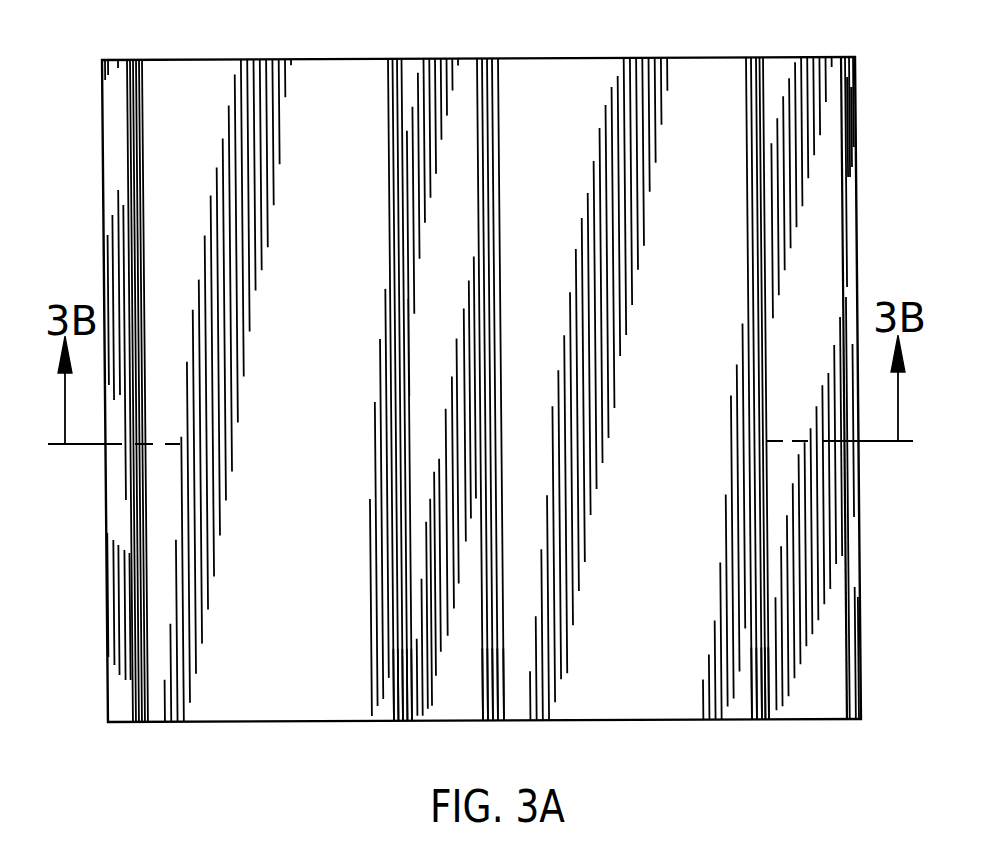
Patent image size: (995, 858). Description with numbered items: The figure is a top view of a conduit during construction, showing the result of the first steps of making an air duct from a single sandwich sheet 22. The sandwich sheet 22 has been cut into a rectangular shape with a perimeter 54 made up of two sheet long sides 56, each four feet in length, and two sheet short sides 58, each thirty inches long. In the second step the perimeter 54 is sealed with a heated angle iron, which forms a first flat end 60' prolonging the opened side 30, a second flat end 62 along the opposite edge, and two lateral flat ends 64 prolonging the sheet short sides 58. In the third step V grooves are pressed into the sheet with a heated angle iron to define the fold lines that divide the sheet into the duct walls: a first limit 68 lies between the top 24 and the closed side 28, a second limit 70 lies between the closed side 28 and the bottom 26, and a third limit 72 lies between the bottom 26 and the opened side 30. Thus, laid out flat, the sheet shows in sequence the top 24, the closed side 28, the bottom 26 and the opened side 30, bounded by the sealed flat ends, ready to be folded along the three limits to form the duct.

The sandwich sheet 22 is at (783, 78).
The top 24 is at (190, 107).
The bottom 26 is at (547, 95).
The closed side 28 is at (457, 95).
The opened side 30 is at (820, 137).
The perimeter 54 is at (275, 58).
The sheet long sides 56 is at (103, 604).
The sheet short sides 58 is at (572, 58).
The first flat end 60' is at (95, 391).
The second flat end 62 is at (847, 220).
The lateral flat ends 64 is at (362, 58).
The first limit 68 is at (400, 722).
The second limit 70 is at (490, 722).
The third limit 72 is at (762, 720).